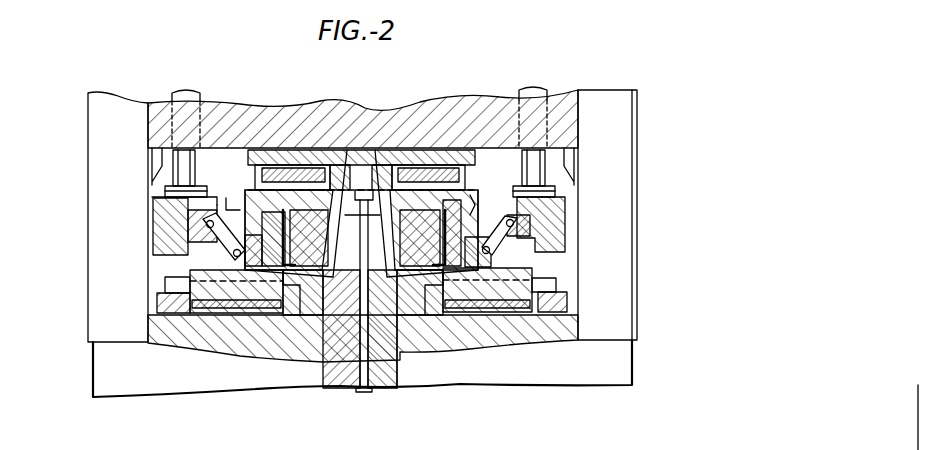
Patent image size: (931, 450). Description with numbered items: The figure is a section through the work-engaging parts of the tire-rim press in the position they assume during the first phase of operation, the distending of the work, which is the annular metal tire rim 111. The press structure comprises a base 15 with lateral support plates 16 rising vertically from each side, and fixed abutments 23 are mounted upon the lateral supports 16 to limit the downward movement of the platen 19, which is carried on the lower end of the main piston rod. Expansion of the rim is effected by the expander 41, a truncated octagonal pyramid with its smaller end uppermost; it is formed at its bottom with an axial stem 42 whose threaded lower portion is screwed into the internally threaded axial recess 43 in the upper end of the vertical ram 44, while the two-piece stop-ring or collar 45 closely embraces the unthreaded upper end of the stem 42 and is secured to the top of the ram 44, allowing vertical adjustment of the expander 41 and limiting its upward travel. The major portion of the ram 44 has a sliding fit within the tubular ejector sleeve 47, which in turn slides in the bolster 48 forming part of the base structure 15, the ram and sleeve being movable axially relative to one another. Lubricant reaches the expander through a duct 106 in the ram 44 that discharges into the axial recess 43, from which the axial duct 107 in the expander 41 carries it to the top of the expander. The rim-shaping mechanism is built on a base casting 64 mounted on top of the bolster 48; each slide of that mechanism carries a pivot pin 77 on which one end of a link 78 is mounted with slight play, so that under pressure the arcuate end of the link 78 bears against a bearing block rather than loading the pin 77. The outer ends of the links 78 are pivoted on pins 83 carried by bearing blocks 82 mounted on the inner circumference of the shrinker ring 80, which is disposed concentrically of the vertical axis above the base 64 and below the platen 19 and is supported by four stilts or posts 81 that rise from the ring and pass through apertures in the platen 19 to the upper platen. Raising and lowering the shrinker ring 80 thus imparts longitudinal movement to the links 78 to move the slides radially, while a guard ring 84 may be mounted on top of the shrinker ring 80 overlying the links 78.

The base 15 is at (104, 367).
The lateral support plates 16 is at (97, 200).
The platen 19 is at (484, 120).
The fixed abutments 23 is at (151, 163).
The expander 41 is at (353, 190).
The axial stem 42 is at (405, 350).
The axial recess 43 is at (342, 390).
The vertical ram 44 is at (378, 390).
The stop-ring or collar 45 is at (322, 348).
The ejector sleeve 47 is at (400, 380).
The bolster 48 is at (514, 340).
The base casting 64 is at (275, 335).
The pivot pin 77 is at (490, 240).
The link 78 is at (244, 232).
The shrinker ring 80 is at (556, 220).
The stilts or posts 81 is at (192, 100).
The bearing blocks 82 is at (188, 200).
The pivot pin 83 is at (218, 212).
The guard ring 84 is at (223, 202).
The duct 106 is at (364, 393).
The axial duct 107 is at (383, 150).
The tire rim 111 is at (256, 206).